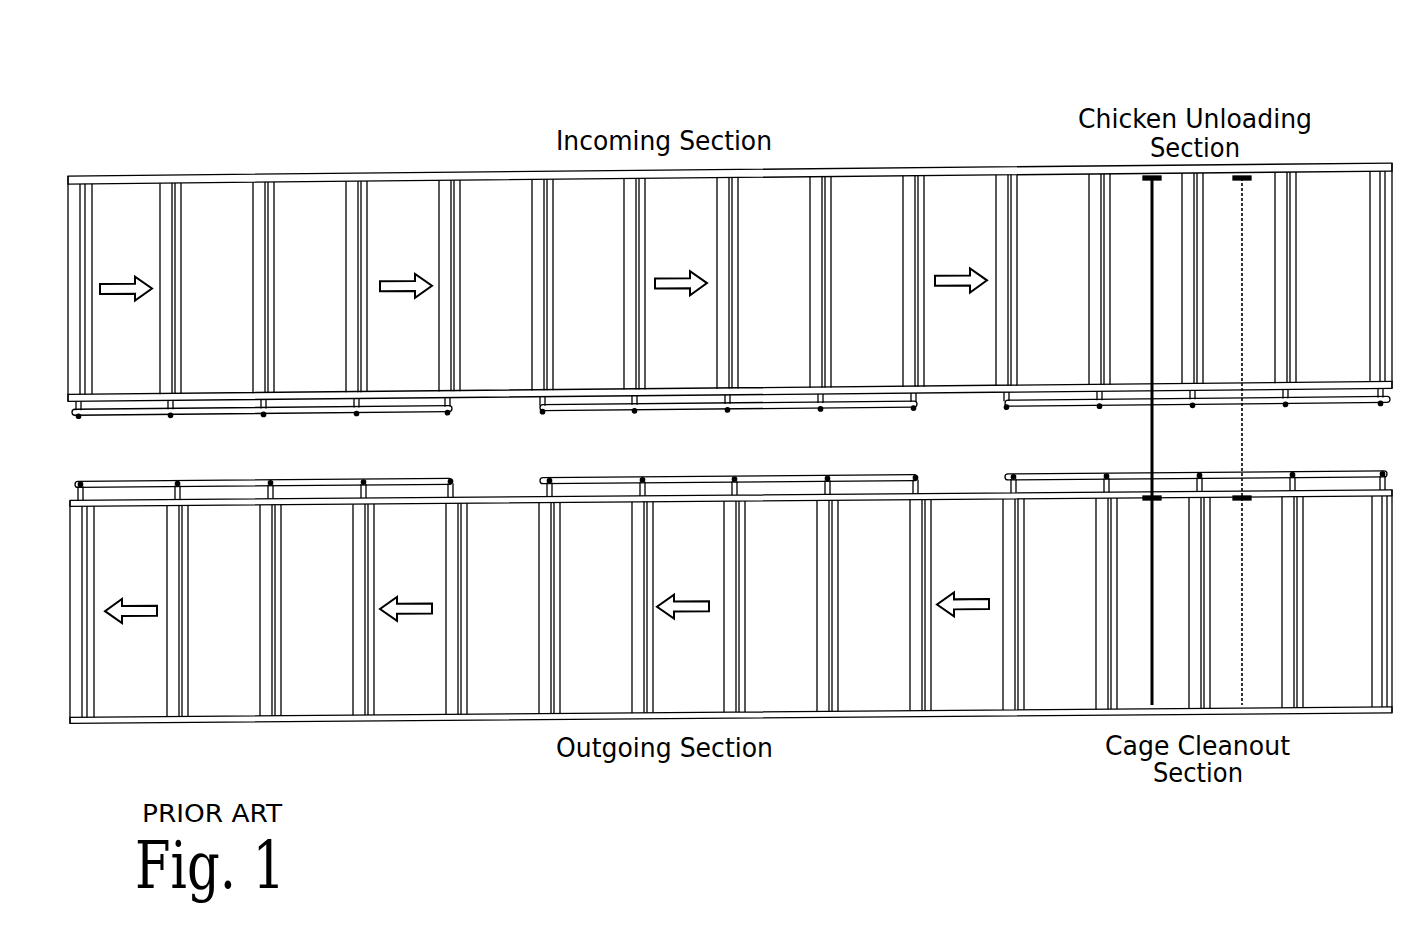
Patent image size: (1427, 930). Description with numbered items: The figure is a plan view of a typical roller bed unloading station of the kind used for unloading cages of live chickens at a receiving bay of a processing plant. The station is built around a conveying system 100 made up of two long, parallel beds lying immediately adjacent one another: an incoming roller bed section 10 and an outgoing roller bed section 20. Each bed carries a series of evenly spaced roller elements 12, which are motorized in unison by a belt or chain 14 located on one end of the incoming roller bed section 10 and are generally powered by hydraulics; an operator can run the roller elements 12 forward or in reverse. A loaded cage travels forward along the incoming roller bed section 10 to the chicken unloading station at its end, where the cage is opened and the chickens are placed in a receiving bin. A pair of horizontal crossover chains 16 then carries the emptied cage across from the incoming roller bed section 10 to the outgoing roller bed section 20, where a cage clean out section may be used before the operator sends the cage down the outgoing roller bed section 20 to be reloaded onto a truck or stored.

The conveying system 100 is at (451, 140).
The incoming roller bed section 10 is at (263, 177).
The roller elements 12 is at (310, 287).
The belt or chain 14 is at (262, 408).
The horizontal crossover chains 16 is at (1152, 440).
The outgoing roller bed section 20 is at (1065, 712).